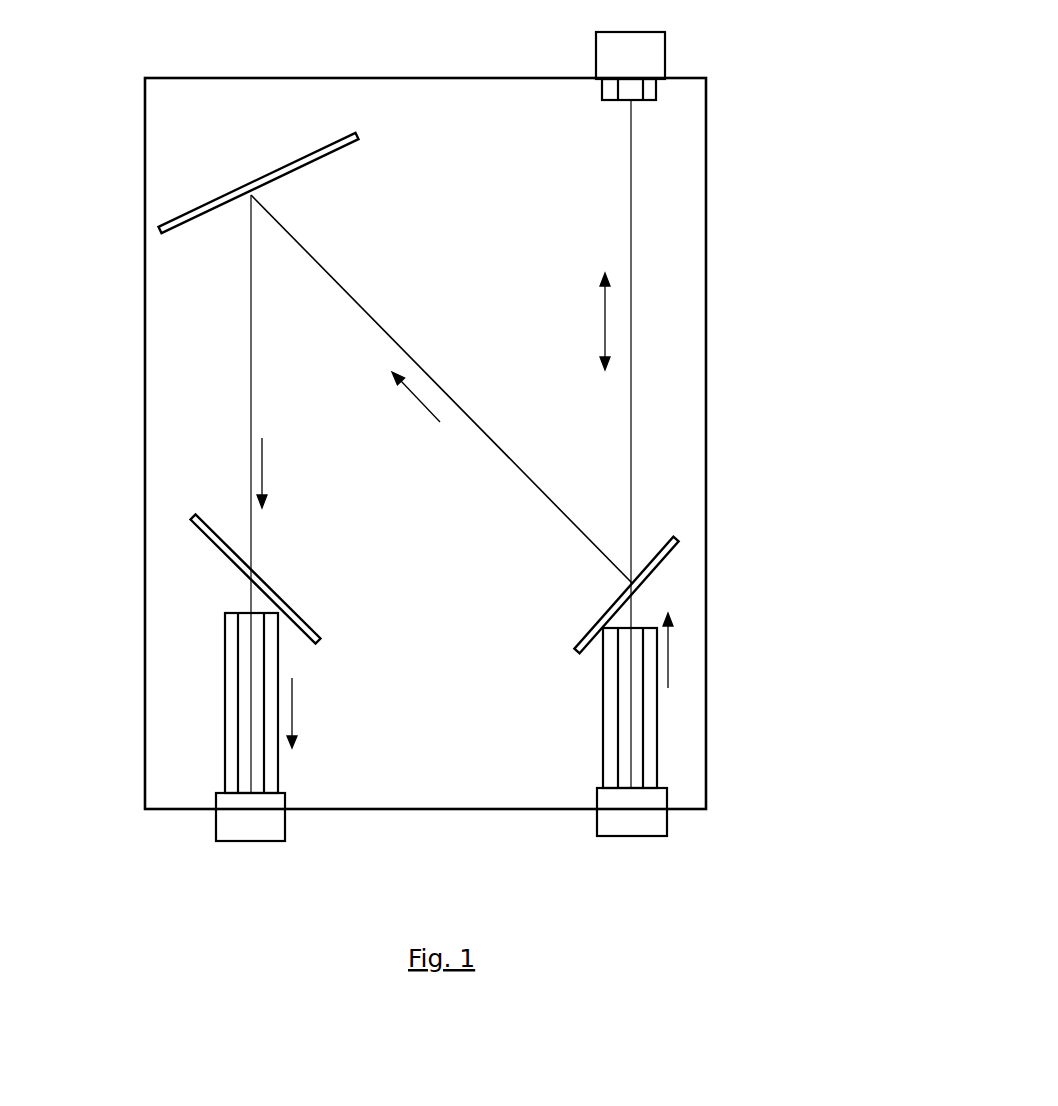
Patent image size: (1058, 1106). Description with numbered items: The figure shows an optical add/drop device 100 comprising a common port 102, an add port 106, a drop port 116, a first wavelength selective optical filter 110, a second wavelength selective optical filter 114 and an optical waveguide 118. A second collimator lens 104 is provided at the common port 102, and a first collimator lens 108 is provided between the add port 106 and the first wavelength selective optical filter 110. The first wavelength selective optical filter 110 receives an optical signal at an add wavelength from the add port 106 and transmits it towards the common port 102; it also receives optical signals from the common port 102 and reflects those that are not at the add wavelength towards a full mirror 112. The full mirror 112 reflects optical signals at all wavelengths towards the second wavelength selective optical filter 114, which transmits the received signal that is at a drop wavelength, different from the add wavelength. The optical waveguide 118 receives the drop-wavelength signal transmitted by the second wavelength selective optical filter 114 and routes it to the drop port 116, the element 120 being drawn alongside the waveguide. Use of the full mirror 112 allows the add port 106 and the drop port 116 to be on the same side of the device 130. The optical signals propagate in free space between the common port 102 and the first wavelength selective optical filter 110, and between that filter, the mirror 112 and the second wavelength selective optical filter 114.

The optical add/drop device 100 is at (145, 127).
The common port 102 is at (645, 57).
The second collimator lens 104 is at (656, 90).
The add port 106 is at (633, 817).
The first collimator lens 108 is at (645, 715).
The first wavelength selective optical filter 110 is at (662, 563).
The full mirror 112 is at (180, 218).
The second wavelength selective optical filter 114 is at (215, 543).
The drop port 116 is at (240, 831).
The optical waveguide 118 is at (243, 690).
The cell wall 120 is at (235, 644).
The device 130 is at (173, 387).